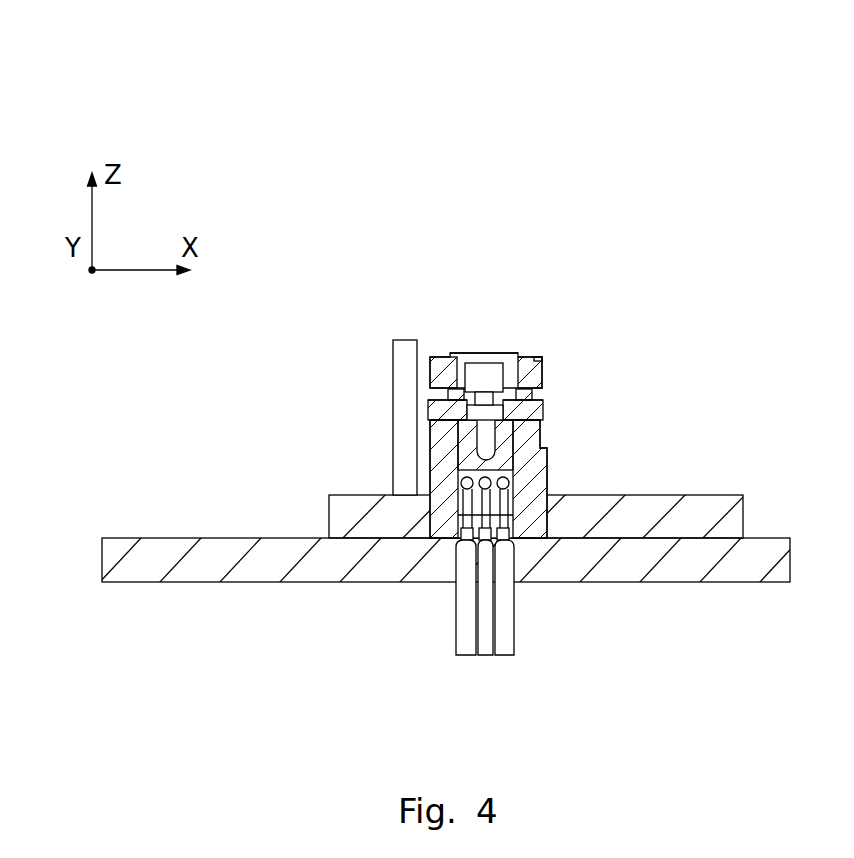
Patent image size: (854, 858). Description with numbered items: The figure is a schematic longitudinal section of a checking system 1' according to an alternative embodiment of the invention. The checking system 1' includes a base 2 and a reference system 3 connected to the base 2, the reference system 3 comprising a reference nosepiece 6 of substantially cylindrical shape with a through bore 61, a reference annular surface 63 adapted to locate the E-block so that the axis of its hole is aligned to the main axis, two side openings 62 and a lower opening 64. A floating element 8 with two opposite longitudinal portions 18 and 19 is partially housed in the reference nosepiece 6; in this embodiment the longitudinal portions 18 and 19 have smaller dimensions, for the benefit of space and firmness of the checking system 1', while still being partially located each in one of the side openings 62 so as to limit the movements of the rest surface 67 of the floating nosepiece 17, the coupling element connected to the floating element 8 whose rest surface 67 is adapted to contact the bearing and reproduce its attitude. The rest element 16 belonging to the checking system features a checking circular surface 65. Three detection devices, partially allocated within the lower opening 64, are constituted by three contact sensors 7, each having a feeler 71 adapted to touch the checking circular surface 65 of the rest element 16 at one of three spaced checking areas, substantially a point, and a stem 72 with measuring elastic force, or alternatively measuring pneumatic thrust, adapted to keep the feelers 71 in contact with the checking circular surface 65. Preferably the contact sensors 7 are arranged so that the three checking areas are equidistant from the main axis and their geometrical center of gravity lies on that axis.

The checking system 1' is at (706, 108).
The base 2 is at (147, 562).
The reference system 3 is at (554, 361).
The reference nosepiece 6 is at (535, 344).
The contact sensors 7 is at (499, 668).
The floating element 8 is at (556, 396).
The rest element 16 is at (434, 408).
The floating nosepiece 17 is at (457, 365).
The longitudinal portion 18 is at (533, 412).
The longitudinal portion 19 is at (393, 398).
The through bore 61 is at (470, 365).
The side openings 62 is at (435, 393).
The reference annular surface 63 is at (541, 357).
The lower opening 64 is at (468, 442).
The checking circular surface 65 is at (458, 482).
The rest surface 67 is at (508, 344).
The feeler 71 is at (474, 490).
The stem 72 is at (502, 505).